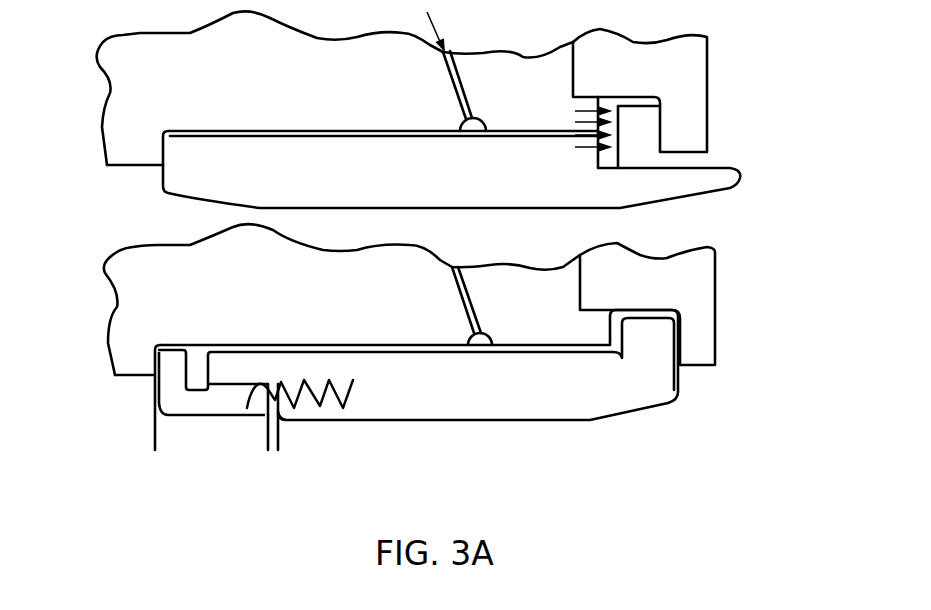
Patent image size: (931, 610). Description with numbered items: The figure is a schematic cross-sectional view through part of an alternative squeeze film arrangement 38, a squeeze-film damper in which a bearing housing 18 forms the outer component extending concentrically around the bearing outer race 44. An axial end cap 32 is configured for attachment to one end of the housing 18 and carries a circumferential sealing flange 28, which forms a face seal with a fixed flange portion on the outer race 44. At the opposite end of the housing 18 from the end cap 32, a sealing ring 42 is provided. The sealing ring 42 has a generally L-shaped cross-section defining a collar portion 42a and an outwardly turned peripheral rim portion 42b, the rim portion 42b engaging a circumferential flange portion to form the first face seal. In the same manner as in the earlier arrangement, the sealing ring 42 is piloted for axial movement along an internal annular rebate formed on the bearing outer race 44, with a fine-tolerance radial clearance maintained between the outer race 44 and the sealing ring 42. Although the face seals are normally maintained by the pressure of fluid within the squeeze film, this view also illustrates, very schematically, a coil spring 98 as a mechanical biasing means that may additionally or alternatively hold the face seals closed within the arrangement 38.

The bearing housing 18 is at (142, 273).
The circumferential sealing flange 28 is at (698, 347).
The axial end cap 32 is at (637, 265).
The squeeze film arrangement 38 is at (776, 252).
The sealing ring 42 is at (152, 406).
The collar portion 42a is at (222, 400).
The outwardly turned peripheral rim portion 42b is at (172, 377).
The bearing outer race 44 is at (368, 392).
The coil spring 98 is at (297, 405).